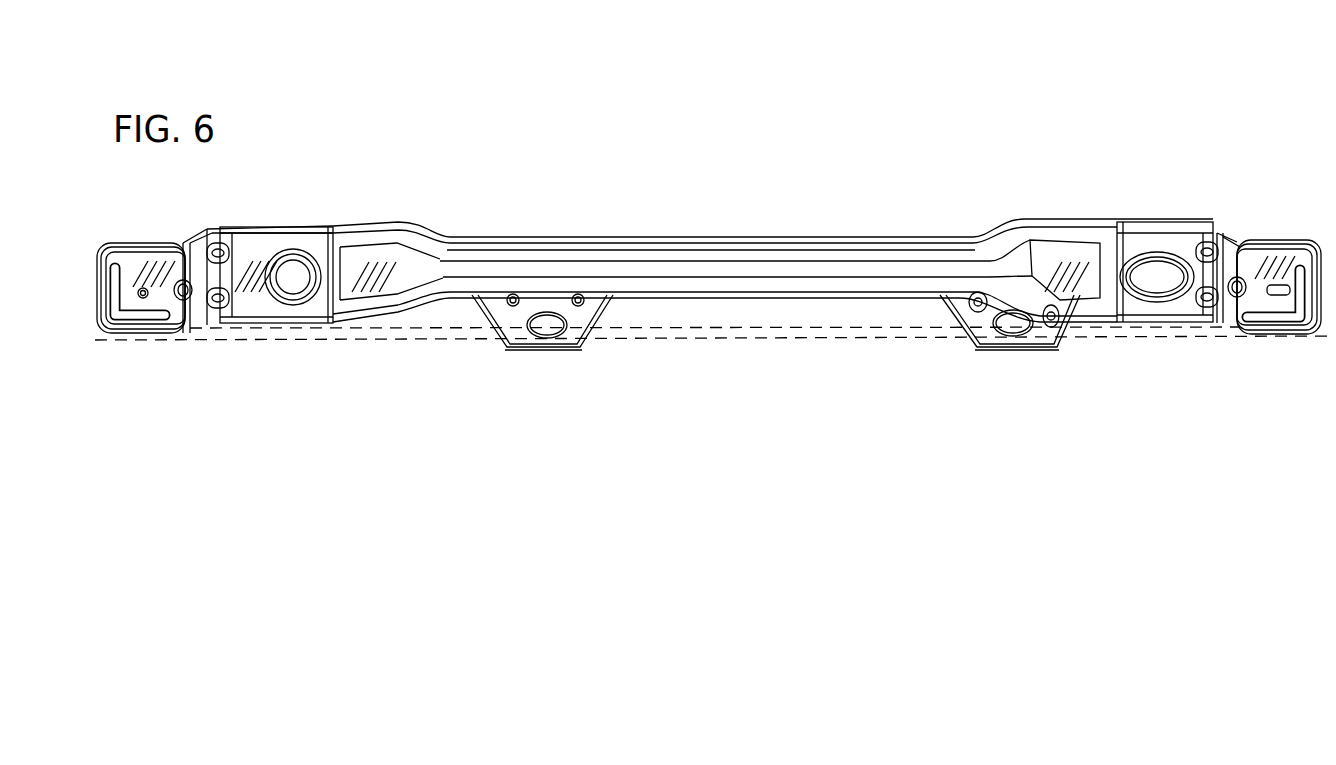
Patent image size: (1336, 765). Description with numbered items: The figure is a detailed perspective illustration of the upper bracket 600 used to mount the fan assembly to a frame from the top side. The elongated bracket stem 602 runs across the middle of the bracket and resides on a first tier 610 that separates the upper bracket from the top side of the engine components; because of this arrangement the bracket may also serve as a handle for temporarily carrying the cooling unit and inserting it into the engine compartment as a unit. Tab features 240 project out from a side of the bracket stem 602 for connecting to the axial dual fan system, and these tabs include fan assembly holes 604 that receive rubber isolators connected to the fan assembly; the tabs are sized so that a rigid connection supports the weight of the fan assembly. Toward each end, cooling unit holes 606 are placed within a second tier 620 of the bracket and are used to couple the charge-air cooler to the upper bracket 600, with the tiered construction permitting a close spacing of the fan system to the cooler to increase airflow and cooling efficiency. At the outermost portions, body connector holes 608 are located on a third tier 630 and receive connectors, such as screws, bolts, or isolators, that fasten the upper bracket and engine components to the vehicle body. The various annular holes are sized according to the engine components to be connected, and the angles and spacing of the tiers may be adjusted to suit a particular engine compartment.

The upper bracket 600 is at (421, 116).
The bracket stem 602 is at (825, 240).
The fan assembly holes 604 is at (547, 323).
The cooling unit holes 606 is at (292, 265).
The body connector holes 608 is at (141, 298).
The first tier 610 is at (740, 304).
The second tier 620 is at (291, 324).
The third tier 630 is at (162, 342).
The tab features 240 is at (578, 330).